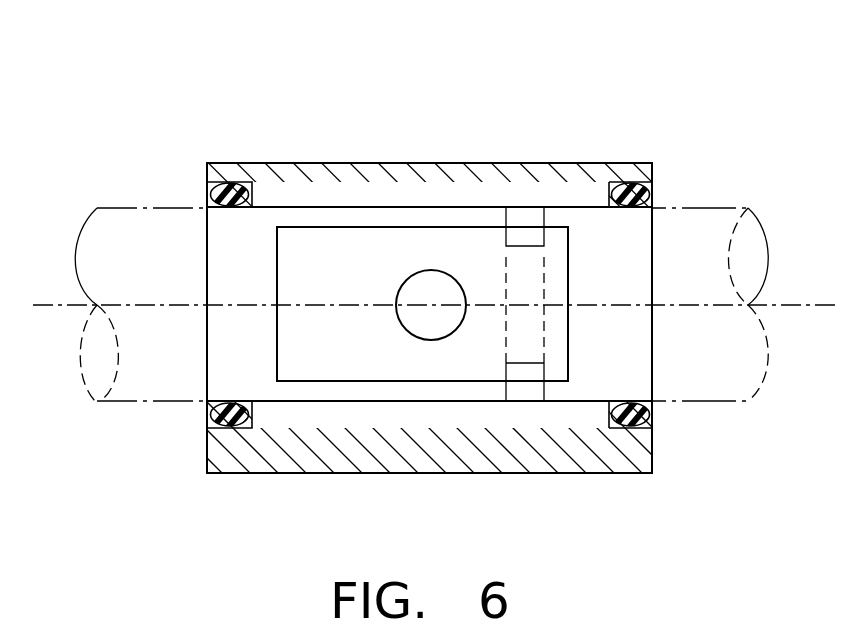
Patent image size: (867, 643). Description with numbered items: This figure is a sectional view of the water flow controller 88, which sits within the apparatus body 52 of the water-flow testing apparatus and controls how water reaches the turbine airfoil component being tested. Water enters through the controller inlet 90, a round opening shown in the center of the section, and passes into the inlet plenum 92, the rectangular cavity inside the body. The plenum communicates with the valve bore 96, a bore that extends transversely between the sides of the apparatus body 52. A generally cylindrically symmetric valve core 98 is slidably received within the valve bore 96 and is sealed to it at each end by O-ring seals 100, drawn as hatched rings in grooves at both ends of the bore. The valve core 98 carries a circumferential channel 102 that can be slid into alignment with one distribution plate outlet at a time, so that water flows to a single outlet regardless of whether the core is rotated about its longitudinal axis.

The water flow controller 88 is at (168, 98).
The apparatus body 52 is at (585, 163).
The O-ring seals 100 is at (212, 195).
The inlet plenum 92 is at (355, 228).
The controller inlet 90 is at (430, 270).
The valve bore 96 is at (390, 401).
The channel 102 is at (527, 322).
The valve core 98 is at (712, 401).